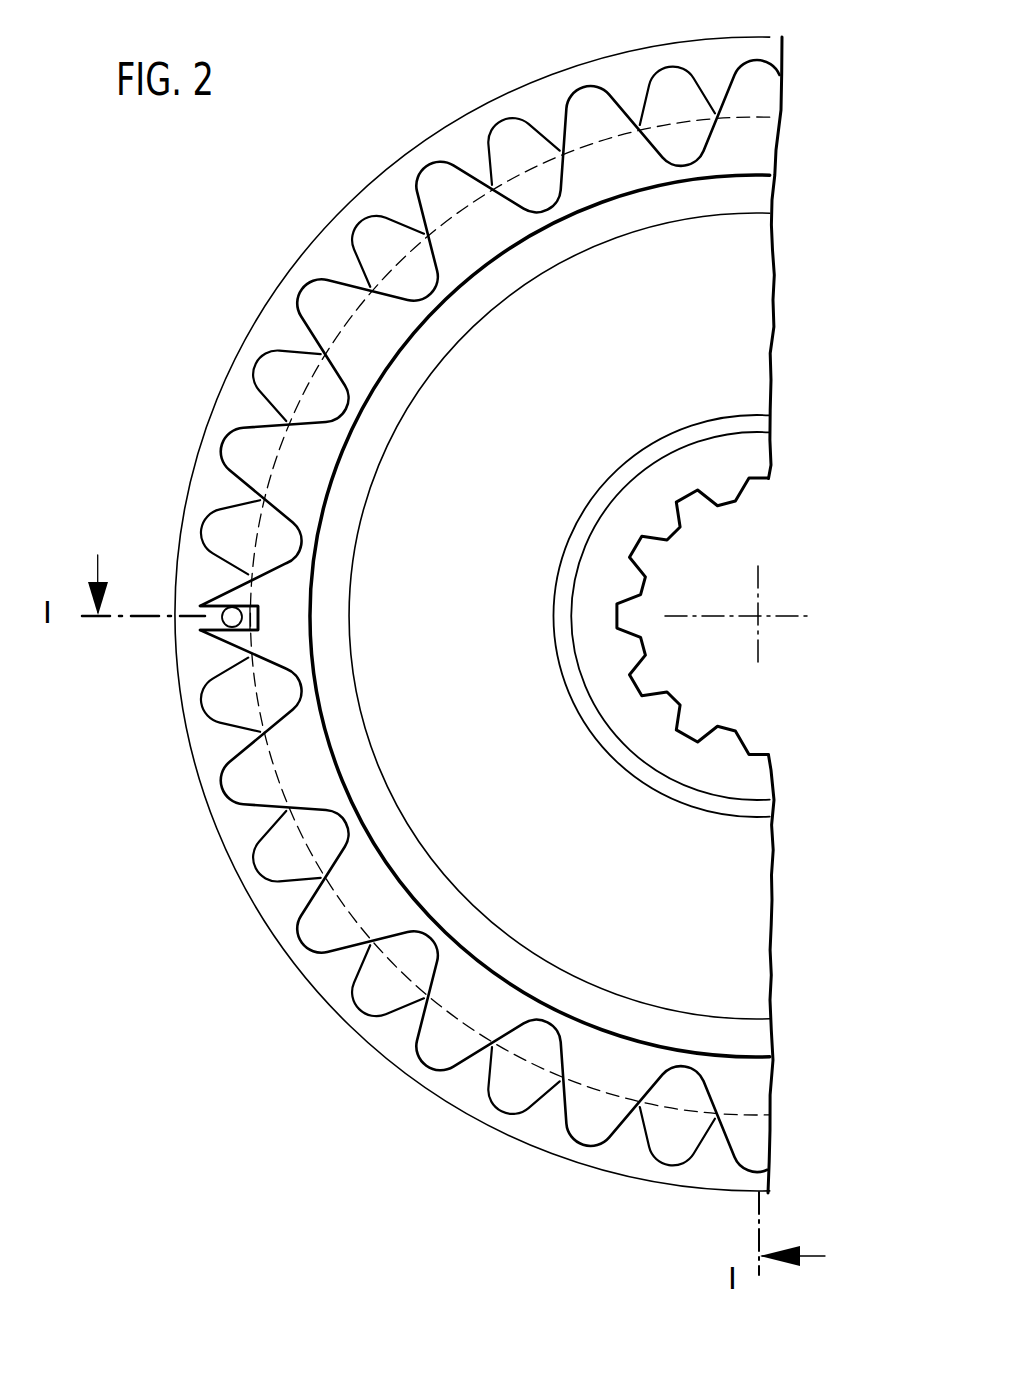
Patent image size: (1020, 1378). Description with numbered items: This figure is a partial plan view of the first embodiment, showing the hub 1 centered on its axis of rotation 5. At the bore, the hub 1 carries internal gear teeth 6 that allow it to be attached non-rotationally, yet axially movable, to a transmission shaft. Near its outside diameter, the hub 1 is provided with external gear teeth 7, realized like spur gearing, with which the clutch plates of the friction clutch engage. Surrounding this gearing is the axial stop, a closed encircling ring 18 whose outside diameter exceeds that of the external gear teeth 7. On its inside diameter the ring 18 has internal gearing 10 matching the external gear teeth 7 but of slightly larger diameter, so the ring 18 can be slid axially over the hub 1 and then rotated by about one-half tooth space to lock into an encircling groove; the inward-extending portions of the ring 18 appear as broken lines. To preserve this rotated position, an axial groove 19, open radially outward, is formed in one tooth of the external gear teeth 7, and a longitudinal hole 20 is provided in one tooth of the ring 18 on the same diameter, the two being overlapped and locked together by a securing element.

The hub 1 is at (810, 310).
The axis of rotation 5 is at (758, 616).
The internal gear teeth 6 is at (733, 494).
The external gear teeth 7 is at (509, 186).
The internal gearing 10 is at (363, 257).
The ring 18 is at (275, 318).
The axial groove 19 is at (203, 605).
The longitudinal hole 20 is at (223, 622).